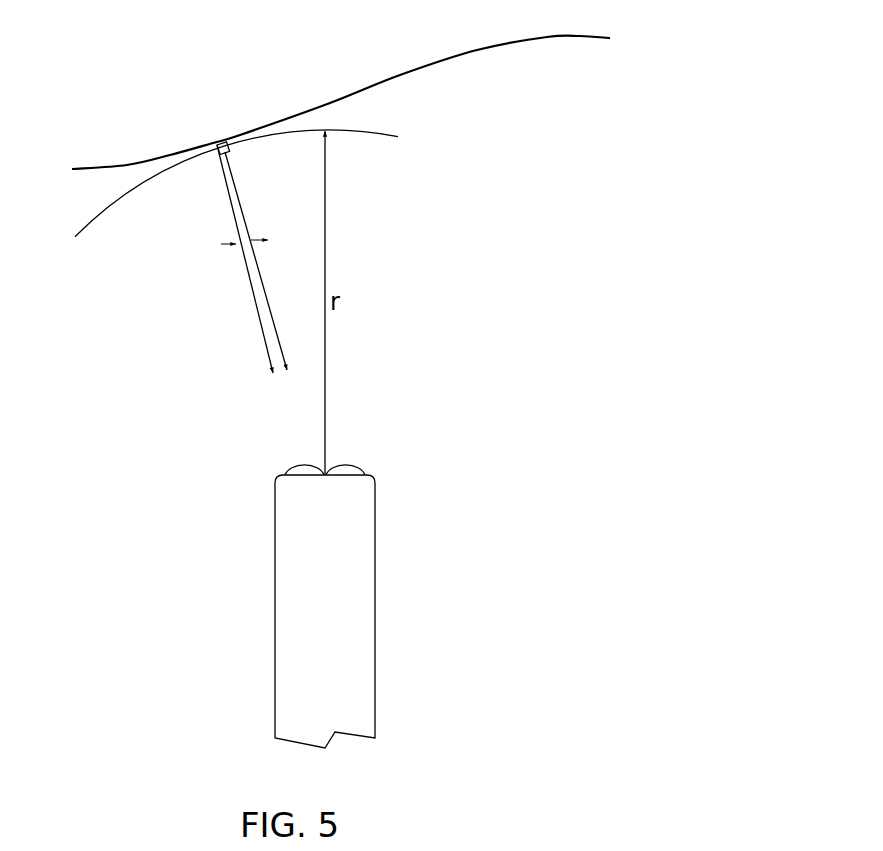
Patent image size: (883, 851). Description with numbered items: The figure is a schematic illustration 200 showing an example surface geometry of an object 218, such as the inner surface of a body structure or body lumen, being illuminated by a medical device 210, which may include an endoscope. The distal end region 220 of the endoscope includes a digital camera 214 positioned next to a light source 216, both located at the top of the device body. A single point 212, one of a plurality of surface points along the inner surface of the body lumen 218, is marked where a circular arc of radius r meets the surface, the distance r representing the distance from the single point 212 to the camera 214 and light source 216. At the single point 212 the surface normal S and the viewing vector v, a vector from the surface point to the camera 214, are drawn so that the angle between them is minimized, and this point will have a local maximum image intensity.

The schematic illustration 200 is at (750, 60).
The medical device 210 is at (347, 672).
The single point 212 is at (203, 130).
The digital camera 214 is at (293, 463).
The light source 216 is at (353, 463).
The object 218 is at (477, 52).
The distal end region 220 is at (412, 542).